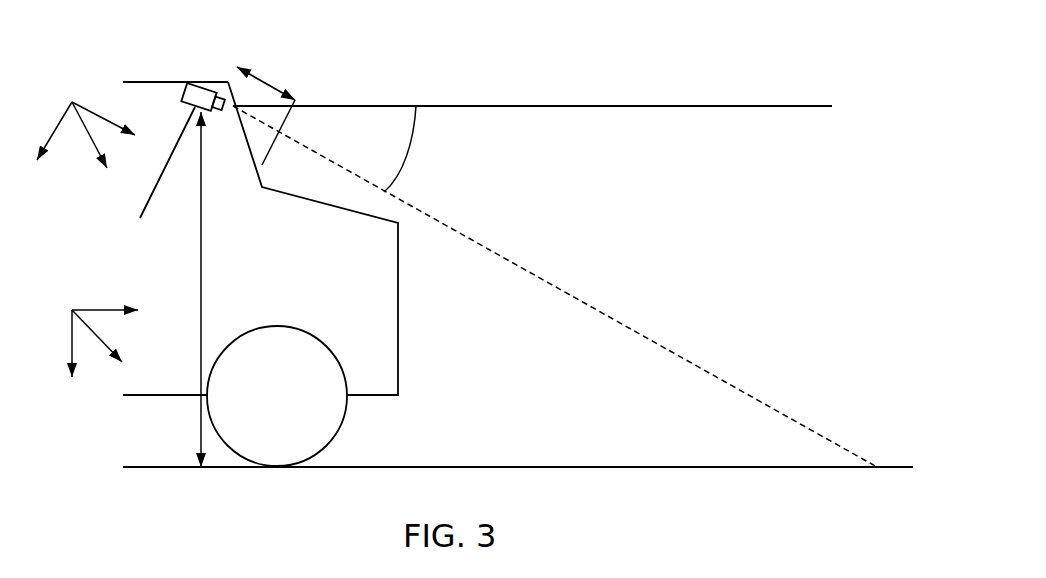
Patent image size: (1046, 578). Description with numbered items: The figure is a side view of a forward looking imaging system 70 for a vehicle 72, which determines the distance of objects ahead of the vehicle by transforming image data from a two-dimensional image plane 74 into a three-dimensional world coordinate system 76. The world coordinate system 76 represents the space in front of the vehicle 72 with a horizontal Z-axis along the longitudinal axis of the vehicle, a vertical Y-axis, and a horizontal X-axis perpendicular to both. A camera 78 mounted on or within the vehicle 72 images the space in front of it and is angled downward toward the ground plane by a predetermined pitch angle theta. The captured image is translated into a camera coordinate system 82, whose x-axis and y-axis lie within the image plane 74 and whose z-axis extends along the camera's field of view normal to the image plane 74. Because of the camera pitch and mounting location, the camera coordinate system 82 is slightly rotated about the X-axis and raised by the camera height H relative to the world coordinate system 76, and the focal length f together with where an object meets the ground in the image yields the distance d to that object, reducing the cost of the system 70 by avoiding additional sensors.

The forward looking imaging system 70 is at (717, 67).
The vehicle 72 is at (142, 82).
The two-dimensional image plane 74 is at (295, 100).
The three-dimensional world coordinate system 76 is at (88, 308).
The camera 78 is at (140, 218).
The three-dimensional camera coordinate system 82 is at (97, 118).